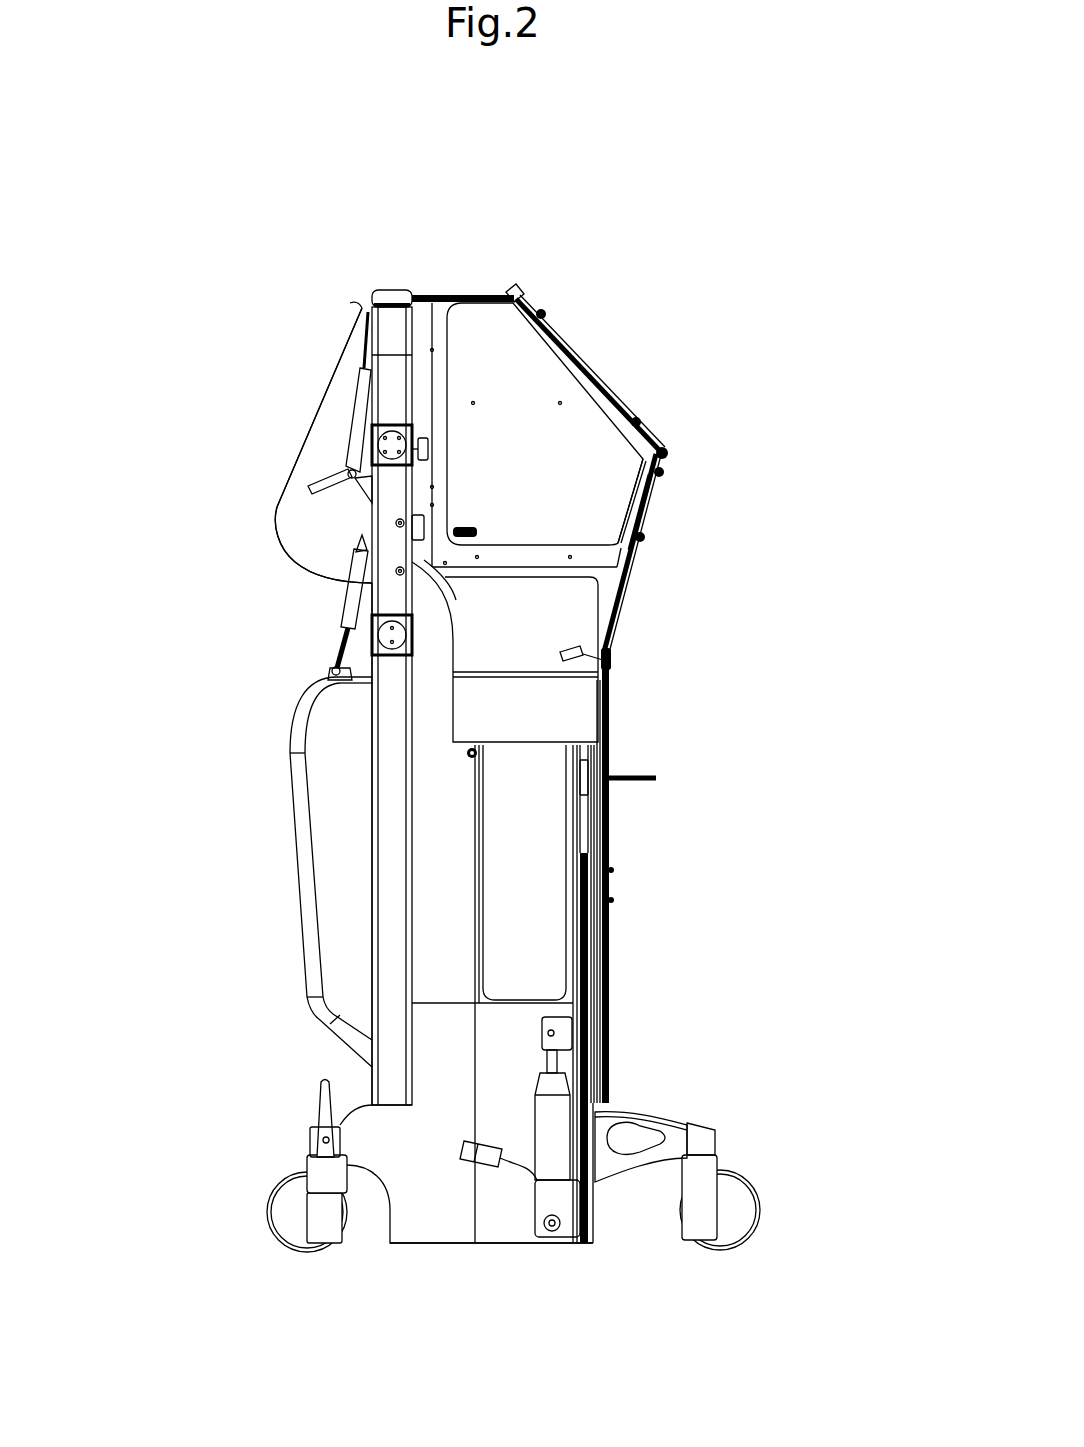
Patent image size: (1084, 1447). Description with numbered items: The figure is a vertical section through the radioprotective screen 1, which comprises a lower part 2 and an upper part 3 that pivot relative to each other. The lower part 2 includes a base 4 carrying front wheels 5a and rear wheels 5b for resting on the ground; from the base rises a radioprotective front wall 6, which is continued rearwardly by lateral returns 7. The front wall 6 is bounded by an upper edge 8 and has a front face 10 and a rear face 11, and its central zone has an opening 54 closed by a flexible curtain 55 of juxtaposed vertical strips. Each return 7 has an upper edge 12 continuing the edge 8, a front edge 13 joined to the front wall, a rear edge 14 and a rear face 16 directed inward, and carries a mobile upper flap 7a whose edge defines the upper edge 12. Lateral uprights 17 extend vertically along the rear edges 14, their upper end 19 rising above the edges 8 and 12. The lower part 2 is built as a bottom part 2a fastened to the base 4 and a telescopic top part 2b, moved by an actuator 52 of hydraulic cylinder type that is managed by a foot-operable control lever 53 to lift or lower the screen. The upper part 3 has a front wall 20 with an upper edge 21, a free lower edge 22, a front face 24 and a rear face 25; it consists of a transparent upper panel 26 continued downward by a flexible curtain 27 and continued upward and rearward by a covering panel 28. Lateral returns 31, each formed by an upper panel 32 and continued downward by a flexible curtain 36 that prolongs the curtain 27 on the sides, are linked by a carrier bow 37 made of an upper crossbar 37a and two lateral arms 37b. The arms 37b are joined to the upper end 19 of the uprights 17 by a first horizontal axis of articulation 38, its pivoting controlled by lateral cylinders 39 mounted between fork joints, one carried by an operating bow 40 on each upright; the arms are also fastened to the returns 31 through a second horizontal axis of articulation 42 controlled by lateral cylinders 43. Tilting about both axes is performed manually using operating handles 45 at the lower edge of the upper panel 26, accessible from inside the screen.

The radioprotective screen 1 is at (450, 215).
The lower part 2 is at (617, 960).
The bottom part 2a is at (590, 860).
The telescopic top part 2b is at (612, 797).
The upper part 3 is at (640, 383).
The base 4 is at (370, 1252).
The front wheels 5a is at (742, 1222).
The rear wheels 5b is at (283, 1213).
The front wall 6 is at (612, 1012).
The lateral returns 7 is at (443, 1118).
The upper flap 7a is at (505, 878).
The upper edge 8 is at (623, 762).
The front face 10 is at (612, 905).
The rear face 11 is at (573, 938).
The upper edge 12 is at (520, 750).
The front edge 13 is at (573, 905).
The rear edge 14 is at (430, 858).
The rear face 16 is at (440, 987).
The lateral uprights 17 is at (390, 777).
The upper end 19 is at (388, 677).
The front wall 20 is at (623, 605).
The upper edge 21 is at (666, 449).
The lower edge 22 is at (617, 733).
The front face 24 is at (654, 516).
The rear face 25 is at (635, 492).
The upper panel 26 is at (632, 573).
The flexible curtain 27 is at (610, 717).
The covering panel 28 is at (588, 362).
The lateral returns 31 is at (480, 360).
The upper panel 32 is at (520, 357).
The flexible curtain 36 is at (490, 707).
The carrier bow 37 is at (357, 306).
The upper crossbar 37a is at (387, 296).
The lateral arms 37b is at (385, 381).
The first horizontal axis of articulation 38 is at (360, 632).
The lateral cylinders 39 is at (325, 598).
The bow 40 is at (300, 740).
The second horizontal axis of articulation 42 is at (362, 437).
The lateral cylinders 43 is at (360, 407).
The operating handles 45 is at (548, 647).
The actuator 52 is at (557, 1150).
The foot-operable control lever 53 is at (487, 1170).
The opening 54 is at (612, 935).
The flexible curtain 55 is at (590, 970).